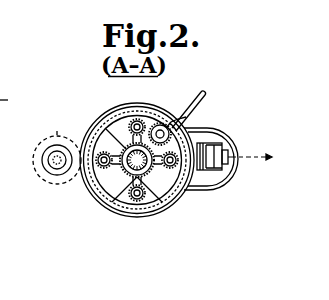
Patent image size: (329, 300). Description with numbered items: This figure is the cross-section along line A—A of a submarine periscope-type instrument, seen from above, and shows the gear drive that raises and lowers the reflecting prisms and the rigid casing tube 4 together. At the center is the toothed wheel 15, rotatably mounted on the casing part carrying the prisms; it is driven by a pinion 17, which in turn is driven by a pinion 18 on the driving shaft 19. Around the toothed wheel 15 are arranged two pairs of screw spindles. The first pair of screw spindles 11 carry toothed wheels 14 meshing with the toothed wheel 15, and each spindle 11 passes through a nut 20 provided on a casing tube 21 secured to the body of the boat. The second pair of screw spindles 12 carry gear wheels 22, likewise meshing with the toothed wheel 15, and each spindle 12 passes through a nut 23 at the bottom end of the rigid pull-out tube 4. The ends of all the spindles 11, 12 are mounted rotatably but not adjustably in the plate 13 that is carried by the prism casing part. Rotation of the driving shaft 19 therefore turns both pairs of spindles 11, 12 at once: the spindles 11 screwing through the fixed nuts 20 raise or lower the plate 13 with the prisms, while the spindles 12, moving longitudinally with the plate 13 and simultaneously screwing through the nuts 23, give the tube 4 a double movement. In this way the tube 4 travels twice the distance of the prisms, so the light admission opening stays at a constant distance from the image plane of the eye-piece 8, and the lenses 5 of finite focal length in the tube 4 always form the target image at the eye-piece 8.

The rigid casing tube 4 is at (106, 204).
The lenses 5 is at (172, 191).
The eye-piece 8 is at (229, 153).
The screw spindles 11 is at (134, 125).
The screw spindles 12 is at (82, 178).
The plate 13 is at (120, 208).
The toothed wheel 14 is at (130, 127).
The toothed wheel 15 is at (120, 154).
The pinion 17 is at (153, 110).
The pinion 18 is at (182, 120).
The driving shaft 19 is at (200, 92).
The nut 20 is at (133, 113).
The casing tube 21 is at (96, 203).
The gear wheel 22 is at (57, 155).
The nut 23 is at (182, 188).